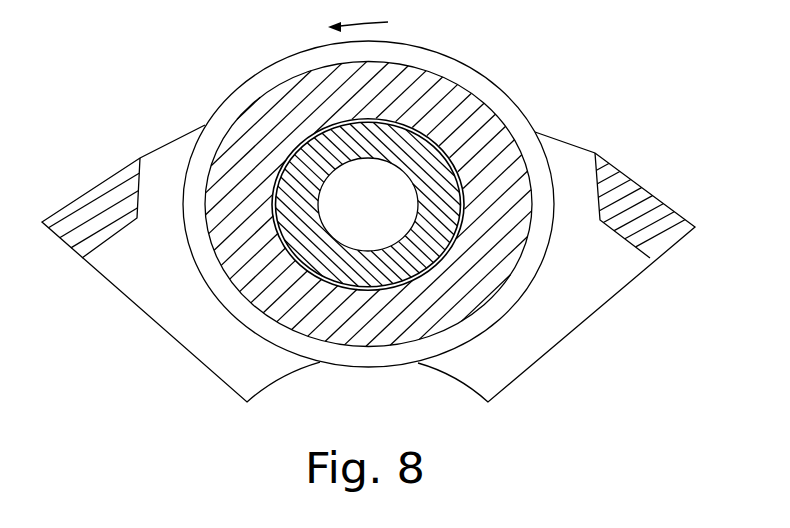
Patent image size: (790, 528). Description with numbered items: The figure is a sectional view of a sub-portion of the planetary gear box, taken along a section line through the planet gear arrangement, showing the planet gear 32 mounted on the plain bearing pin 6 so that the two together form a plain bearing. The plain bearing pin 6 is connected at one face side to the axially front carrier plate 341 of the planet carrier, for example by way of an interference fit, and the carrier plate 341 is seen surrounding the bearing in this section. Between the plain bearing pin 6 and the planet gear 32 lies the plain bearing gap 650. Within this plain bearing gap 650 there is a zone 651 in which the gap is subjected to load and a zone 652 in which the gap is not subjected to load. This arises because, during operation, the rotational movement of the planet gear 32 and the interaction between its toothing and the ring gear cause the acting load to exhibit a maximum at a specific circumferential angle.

The plain bearing pin 6 is at (408, 158).
The planet gear 32 is at (495, 119).
The axially front carrier plate 341 is at (570, 312).
The plain bearing gap 650 is at (398, 288).
The zone subjected to load 651 is at (288, 263).
The zone not subjected to load 652 is at (446, 240).